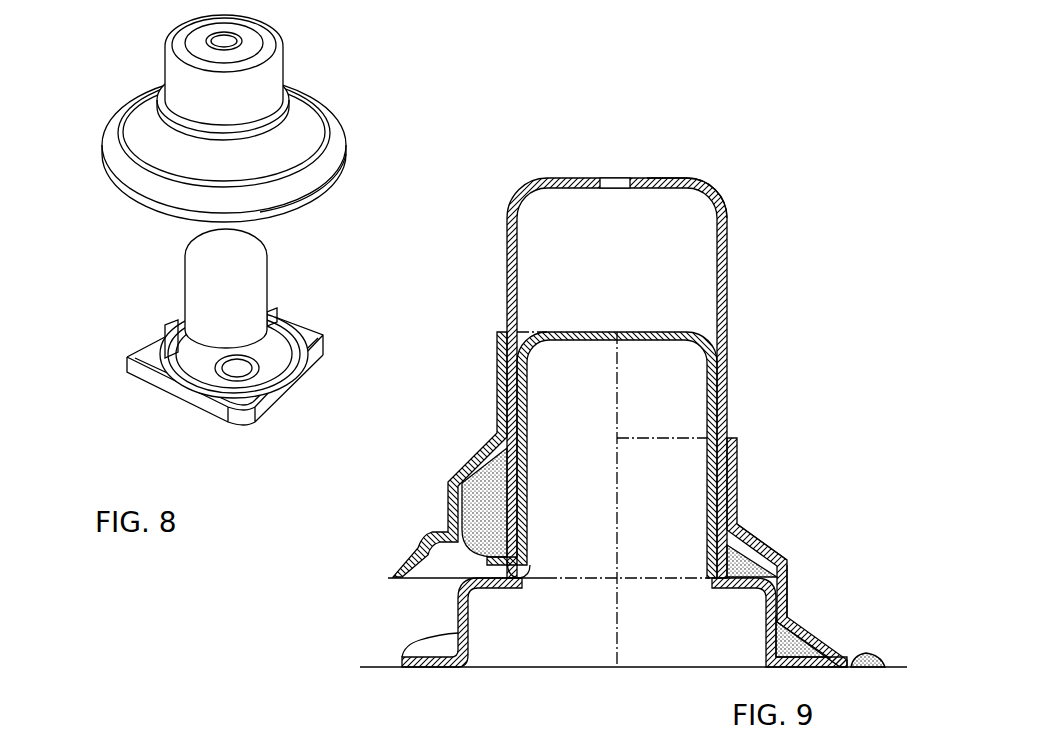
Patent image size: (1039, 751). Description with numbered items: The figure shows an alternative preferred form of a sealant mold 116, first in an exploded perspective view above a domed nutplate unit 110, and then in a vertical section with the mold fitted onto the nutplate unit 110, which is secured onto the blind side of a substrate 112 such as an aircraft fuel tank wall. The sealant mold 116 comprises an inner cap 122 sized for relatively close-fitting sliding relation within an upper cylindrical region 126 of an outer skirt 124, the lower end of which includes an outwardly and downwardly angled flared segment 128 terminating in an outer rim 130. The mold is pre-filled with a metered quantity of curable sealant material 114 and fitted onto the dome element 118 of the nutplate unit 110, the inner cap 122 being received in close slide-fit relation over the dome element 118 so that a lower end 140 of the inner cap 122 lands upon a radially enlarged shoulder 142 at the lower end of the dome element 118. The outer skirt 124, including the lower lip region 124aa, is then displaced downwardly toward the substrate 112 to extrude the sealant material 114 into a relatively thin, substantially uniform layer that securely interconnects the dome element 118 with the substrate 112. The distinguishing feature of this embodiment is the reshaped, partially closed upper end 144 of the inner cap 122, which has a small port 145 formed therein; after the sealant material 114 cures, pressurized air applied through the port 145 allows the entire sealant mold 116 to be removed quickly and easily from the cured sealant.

In FIG. 8, the domed nutplate unit 110 is at (222, 347).
In FIG. 9, the substrate 112 is at (388, 668).
In FIG. 9, the curable sealant material 114 is at (475, 483).
In FIG. 8, the sealant mold 116 is at (98, 190).
In FIG. 9, the sealant mold 116 is at (617, 491).
In FIG. 8, the dome element 118 is at (248, 297).
In FIG. 9, the dome element 118 is at (643, 332).
In FIG. 8, the inner cap 122 is at (277, 87).
In FIG. 9, the inner cap 122 is at (649, 353).
In FIG. 8, the outer skirt 124 is at (259, 118).
In FIG. 9, the flange lip 124aa is at (778, 557).
In FIG. 8, the upper cylindrical region 126 is at (287, 113).
In FIG. 9, the upper cylindrical region 126 is at (793, 520).
In FIG. 8, the flared segment 128 is at (307, 153).
In FIG. 9, the flared segment 128 is at (787, 592).
In FIG. 8, the outer rim 130 is at (323, 188).
In FIG. 9, the outer rim 130 is at (848, 657).
In FIG. 9, the lower end of the inner cap 140 is at (517, 563).
In FIG. 9, the radially enlarged shoulder 142 is at (463, 583).
In FIG. 9, the upper end of the inner cap 144 is at (682, 178).
In FIG. 9, the port 145 is at (623, 177).